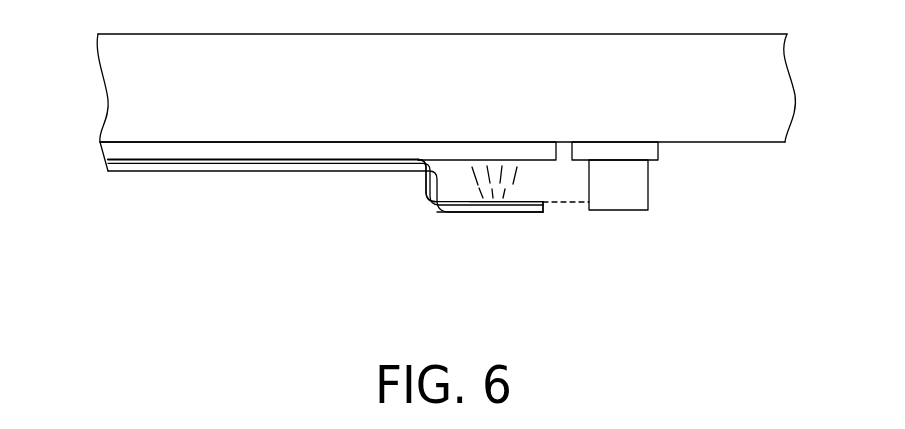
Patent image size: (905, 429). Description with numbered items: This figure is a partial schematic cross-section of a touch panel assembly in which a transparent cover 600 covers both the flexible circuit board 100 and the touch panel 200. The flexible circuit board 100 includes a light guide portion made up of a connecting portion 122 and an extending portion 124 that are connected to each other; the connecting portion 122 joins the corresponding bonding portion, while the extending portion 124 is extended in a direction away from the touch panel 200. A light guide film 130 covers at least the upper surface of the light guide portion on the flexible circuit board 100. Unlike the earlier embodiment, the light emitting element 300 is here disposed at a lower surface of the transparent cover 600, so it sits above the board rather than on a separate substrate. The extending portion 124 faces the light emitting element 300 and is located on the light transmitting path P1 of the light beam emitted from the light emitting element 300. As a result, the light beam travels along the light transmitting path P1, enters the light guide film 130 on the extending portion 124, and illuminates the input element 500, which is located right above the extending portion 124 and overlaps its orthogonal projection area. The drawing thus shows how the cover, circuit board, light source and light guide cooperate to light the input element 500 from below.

The transparent cover 600 is at (752, 86).
The touch panel 200 is at (135, 150).
The flexible circuit board 100 is at (200, 173).
The connecting portion 122 is at (397, 188).
The light guide film 130 is at (458, 213).
The extending portion 124 is at (523, 213).
The light transmitting path P1 is at (565, 202).
The light emitting element 300 is at (625, 193).
The input element 500 is at (556, 138).